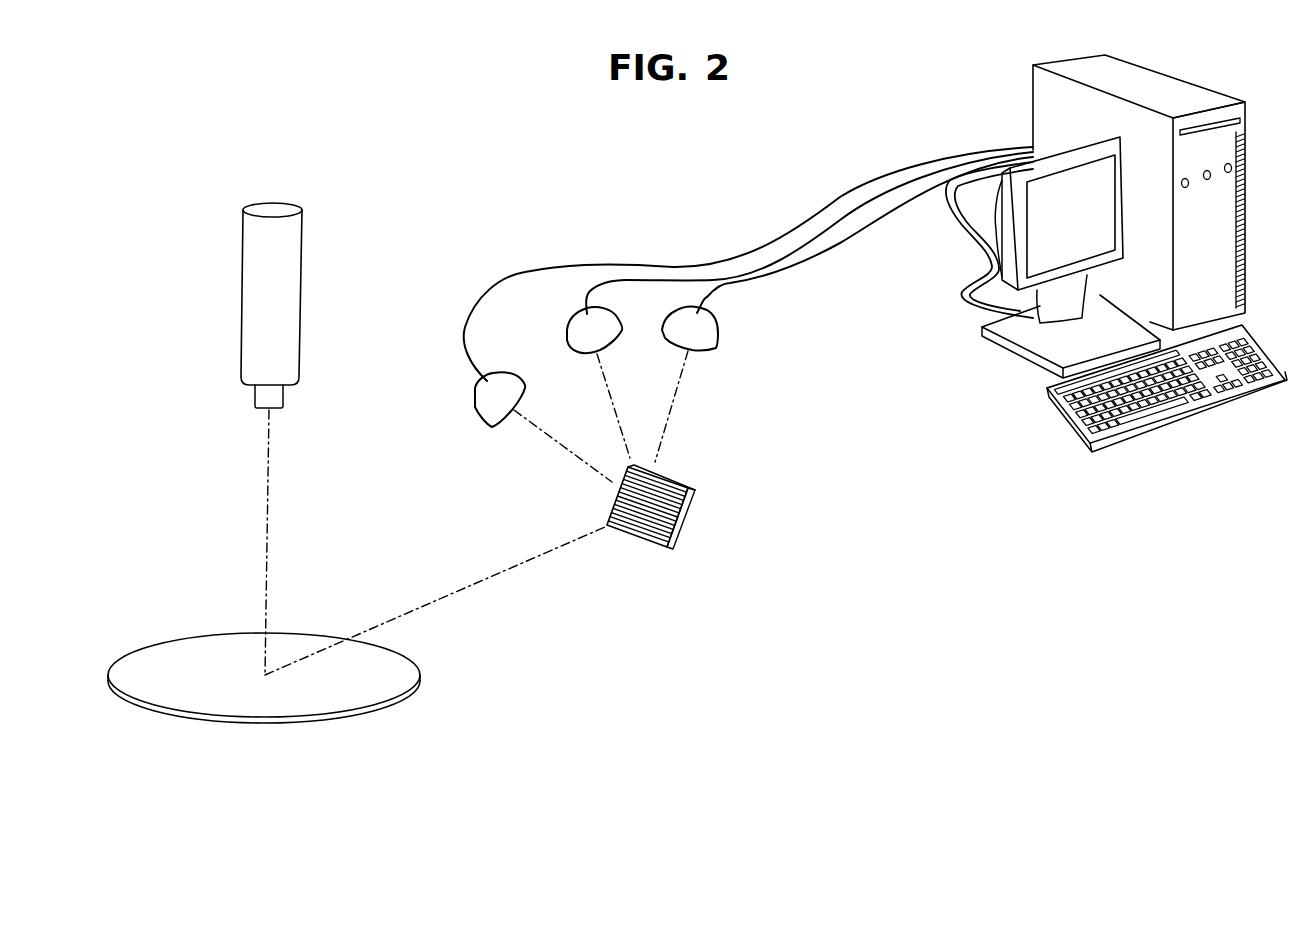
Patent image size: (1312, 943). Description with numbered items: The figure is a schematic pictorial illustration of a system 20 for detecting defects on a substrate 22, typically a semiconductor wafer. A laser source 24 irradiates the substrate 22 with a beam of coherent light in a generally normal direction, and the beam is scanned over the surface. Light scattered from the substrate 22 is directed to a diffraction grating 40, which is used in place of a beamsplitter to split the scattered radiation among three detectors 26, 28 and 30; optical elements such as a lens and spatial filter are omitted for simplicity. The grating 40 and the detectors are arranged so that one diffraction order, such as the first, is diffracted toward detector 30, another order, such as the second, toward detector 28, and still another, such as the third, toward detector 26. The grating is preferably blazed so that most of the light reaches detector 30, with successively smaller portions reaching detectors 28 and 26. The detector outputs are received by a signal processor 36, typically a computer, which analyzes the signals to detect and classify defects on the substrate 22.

The system 20 is at (355, 106).
The substrate 22 is at (383, 692).
The laser source 24 is at (292, 282).
The detector 26 is at (718, 324).
The detector 28 is at (568, 340).
The detector 30 is at (476, 394).
The signal processor 36 is at (1250, 192).
The diffraction grating 40 is at (680, 520).